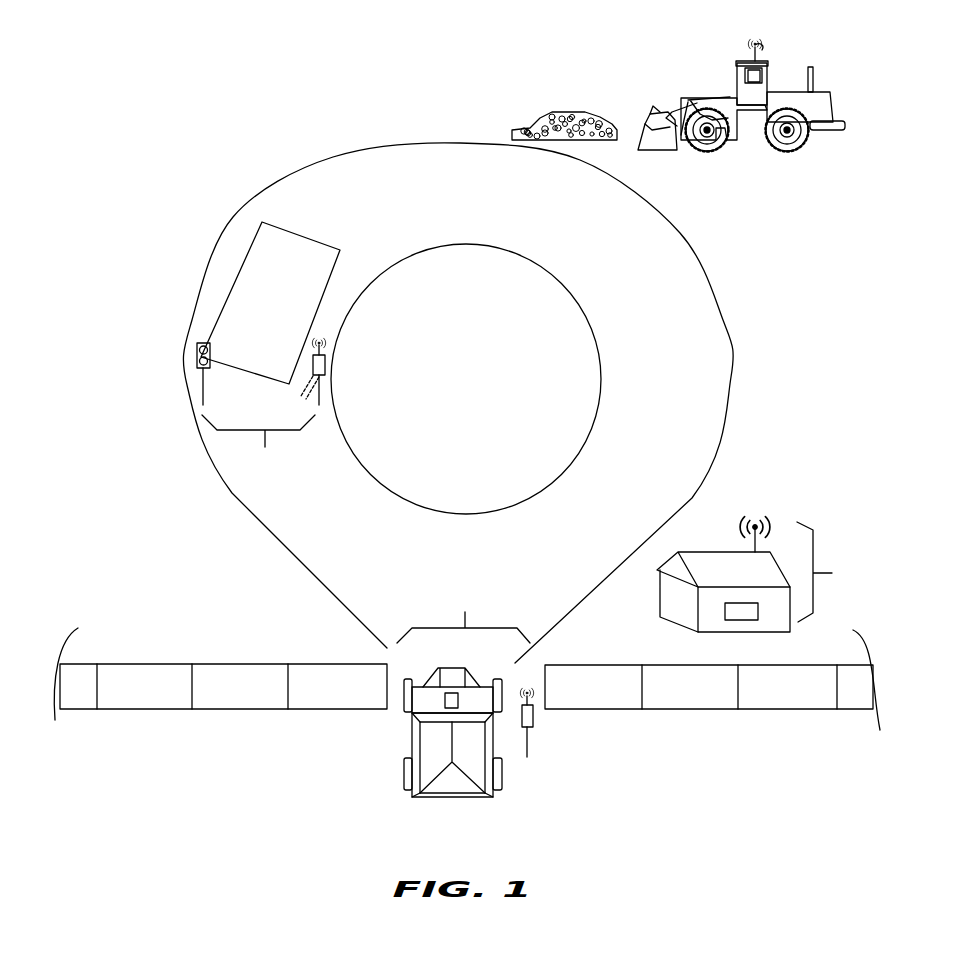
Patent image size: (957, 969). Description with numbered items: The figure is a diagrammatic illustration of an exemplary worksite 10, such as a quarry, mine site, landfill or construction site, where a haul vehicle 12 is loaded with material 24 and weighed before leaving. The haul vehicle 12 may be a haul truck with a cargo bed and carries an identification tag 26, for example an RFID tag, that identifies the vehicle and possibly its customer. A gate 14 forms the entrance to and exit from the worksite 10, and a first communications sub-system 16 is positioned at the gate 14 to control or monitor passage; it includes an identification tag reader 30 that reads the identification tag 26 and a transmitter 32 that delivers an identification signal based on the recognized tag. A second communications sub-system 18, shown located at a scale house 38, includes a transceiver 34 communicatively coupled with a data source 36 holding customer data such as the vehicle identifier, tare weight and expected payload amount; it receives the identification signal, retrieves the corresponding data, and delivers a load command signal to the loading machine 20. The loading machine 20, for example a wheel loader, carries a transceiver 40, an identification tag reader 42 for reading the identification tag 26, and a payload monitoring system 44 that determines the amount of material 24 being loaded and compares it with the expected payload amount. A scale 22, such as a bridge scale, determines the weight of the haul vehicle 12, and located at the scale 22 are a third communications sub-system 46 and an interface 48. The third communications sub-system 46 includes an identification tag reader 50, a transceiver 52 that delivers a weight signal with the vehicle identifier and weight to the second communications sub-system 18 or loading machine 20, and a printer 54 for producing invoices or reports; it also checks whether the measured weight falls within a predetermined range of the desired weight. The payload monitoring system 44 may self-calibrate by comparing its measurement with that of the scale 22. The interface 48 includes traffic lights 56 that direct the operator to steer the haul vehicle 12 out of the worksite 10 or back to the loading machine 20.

The worksite 10 is at (165, 110).
The haul vehicle 12 is at (405, 772).
The gate 14 is at (463, 614).
The first communications sub-system 16 is at (527, 740).
The second communications sub-system 18 is at (829, 572).
The loading machine 20 is at (845, 100).
The scale 22 is at (270, 303).
The material 24 is at (576, 95).
The identification tag 26 is at (445, 706).
The identification tag reader 30 is at (533, 720).
The transmitter 32 is at (532, 695).
The transceiver 34 is at (752, 538).
The data source 36 is at (740, 615).
The scale house 38 is at (677, 597).
The transceiver 40 is at (762, 50).
The identification tag reader 42 is at (747, 62).
The payload monitoring system 44 is at (723, 95).
The third communications sub-system 46 is at (258, 445).
The interface 48 is at (203, 390).
The identification tag reader 50 is at (325, 360).
The transceiver 52 is at (325, 348).
The printer 54 is at (325, 375).
The traffic light 56 is at (200, 348).